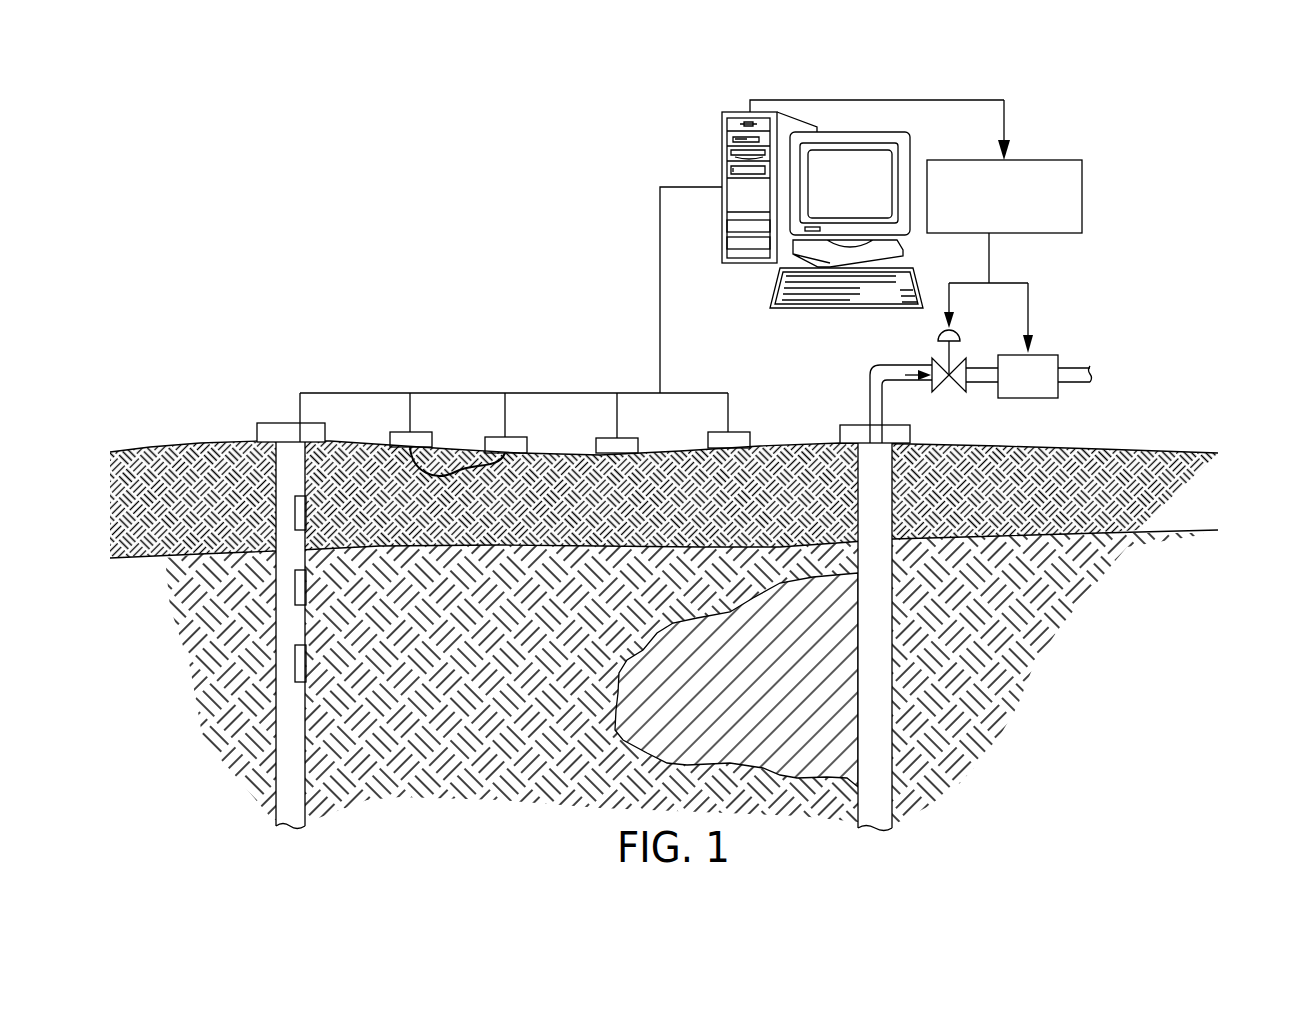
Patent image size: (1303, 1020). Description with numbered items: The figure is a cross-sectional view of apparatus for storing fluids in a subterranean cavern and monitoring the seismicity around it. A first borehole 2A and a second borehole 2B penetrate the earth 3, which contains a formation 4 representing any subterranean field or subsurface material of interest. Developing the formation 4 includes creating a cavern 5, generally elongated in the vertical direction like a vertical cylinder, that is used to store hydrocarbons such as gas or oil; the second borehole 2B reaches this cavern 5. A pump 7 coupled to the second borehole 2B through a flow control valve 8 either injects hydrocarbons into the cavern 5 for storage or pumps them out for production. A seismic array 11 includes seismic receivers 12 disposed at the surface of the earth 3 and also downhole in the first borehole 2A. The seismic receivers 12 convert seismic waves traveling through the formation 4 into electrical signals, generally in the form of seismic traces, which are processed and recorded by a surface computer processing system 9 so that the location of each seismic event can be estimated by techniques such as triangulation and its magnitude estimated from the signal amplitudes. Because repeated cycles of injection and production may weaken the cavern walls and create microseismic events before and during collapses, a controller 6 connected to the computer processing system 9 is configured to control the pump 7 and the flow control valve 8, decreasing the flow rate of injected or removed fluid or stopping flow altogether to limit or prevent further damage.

The first borehole 2A is at (285, 532).
The second borehole 2B is at (877, 505).
The earth 3 is at (201, 491).
The formation 4 is at (247, 601).
The subterranean cavern 5 is at (667, 675).
The controller 6 is at (1070, 211).
The pump 7 is at (1045, 368).
The flow control valve 8 is at (947, 382).
The surface computer processing system 9 is at (773, 288).
The seismic array 11 is at (506, 388).
The seismic receivers 12 is at (306, 520).